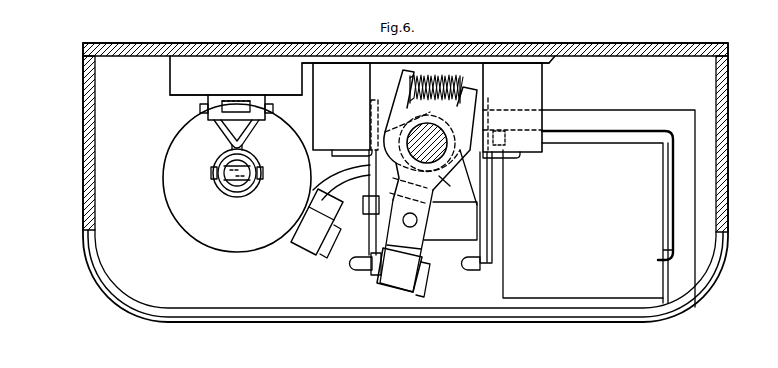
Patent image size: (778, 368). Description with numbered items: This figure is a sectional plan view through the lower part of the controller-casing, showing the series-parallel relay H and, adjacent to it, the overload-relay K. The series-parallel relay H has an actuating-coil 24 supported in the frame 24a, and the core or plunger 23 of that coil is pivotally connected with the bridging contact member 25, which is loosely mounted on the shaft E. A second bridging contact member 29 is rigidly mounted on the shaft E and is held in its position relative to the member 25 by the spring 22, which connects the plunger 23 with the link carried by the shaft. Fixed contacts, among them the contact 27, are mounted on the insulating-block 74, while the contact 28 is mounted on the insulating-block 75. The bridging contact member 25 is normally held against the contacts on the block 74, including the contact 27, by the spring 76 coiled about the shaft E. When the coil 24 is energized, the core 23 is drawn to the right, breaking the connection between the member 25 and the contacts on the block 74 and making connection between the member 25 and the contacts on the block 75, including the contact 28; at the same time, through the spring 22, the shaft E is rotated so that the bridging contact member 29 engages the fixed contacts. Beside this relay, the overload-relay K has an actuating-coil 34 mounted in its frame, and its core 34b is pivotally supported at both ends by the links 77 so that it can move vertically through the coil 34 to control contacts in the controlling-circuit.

The spring 22 is at (440, 80).
The shaft E is at (437, 135).
The insulating-block 74 is at (346, 159).
The insulating-block 75 is at (511, 162).
The frame 24a is at (578, 121).
The actuating-coil 24 is at (610, 158).
The spring 76 is at (430, 137).
The plunger 23 is at (450, 230).
The bridging contact member 25 is at (397, 277).
The contact 27 is at (377, 260).
The contact 28 is at (472, 271).
The series-parallel relay H is at (451, 290).
The actuating-coil 34 is at (197, 222).
The core 34b is at (213, 168).
The links 77 is at (220, 135).
The bridging contact member 29 is at (308, 243).
The overload-relay K is at (405, 182).